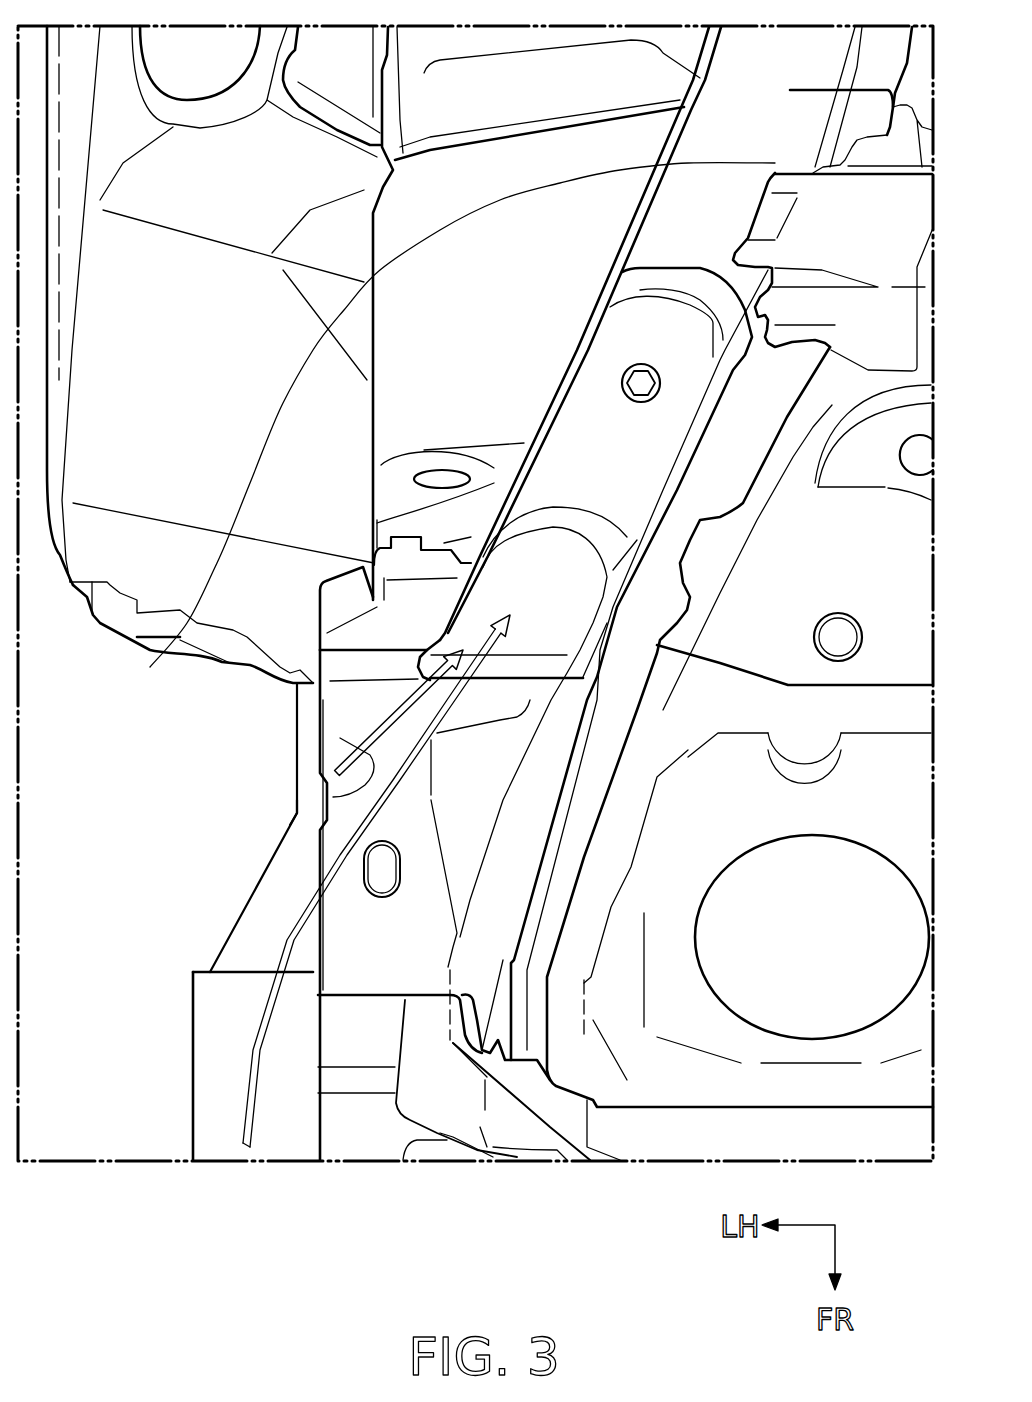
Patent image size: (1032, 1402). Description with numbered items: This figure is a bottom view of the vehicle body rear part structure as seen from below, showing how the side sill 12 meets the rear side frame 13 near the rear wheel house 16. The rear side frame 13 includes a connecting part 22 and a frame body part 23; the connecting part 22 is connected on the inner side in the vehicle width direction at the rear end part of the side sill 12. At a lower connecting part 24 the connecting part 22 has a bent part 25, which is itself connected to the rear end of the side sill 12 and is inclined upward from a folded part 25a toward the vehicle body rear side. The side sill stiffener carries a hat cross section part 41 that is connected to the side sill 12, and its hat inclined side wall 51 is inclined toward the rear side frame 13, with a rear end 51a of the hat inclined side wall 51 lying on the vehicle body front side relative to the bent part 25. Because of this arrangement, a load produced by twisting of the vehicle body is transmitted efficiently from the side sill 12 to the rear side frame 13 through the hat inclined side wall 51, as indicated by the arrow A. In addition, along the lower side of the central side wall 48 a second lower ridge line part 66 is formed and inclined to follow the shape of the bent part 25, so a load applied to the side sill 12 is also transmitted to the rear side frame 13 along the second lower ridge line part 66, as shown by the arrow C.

The side sill 12 is at (193, 1090).
The rear side frame 13 is at (120, 645).
The rear wheel house 16 is at (66, 562).
The connecting part 22 is at (310, 683).
The frame body part 23 is at (157, 650).
The lower connecting part 24 is at (417, 907).
The bent part 25 is at (507, 694).
The folded part 25a is at (330, 797).
The hat cross section part 41 is at (218, 827).
The central side wall 48 is at (293, 772).
The hat inclined side wall 51 is at (257, 890).
The rear end 51a is at (287, 813).
The second lower ridge line part 66 is at (303, 785).
The arrow A is at (253, 1017).
The arrow C is at (340, 738).